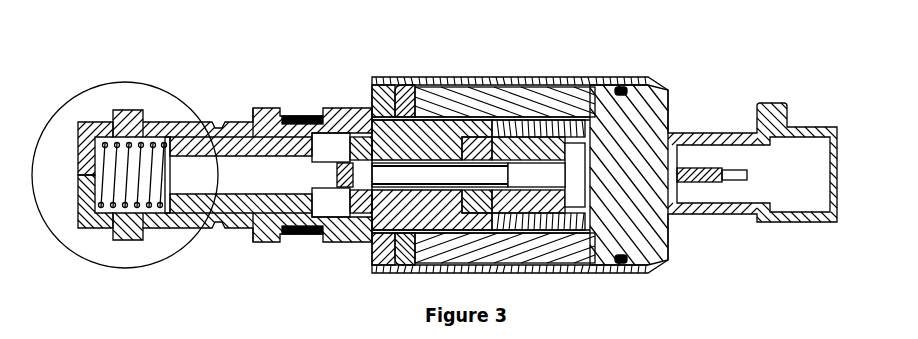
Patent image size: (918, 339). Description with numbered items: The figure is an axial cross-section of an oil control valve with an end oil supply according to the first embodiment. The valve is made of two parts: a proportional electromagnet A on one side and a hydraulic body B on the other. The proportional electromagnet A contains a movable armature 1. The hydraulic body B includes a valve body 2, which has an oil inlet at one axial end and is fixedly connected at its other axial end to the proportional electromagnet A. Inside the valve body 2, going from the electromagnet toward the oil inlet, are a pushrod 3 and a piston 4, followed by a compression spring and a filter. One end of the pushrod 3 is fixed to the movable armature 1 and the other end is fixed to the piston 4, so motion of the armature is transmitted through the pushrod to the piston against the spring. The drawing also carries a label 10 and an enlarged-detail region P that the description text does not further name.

The movable armature 1 is at (72, 190).
The valve body 2 is at (267, 110).
The pushrod 3 is at (405, 125).
The piston 4 is at (299, 104).
The solenoid coil 10 is at (497, 130).
The detail region P is at (151, 78).
The proportional electromagnet A is at (571, 63).
The hydraulic body B is at (341, 62).